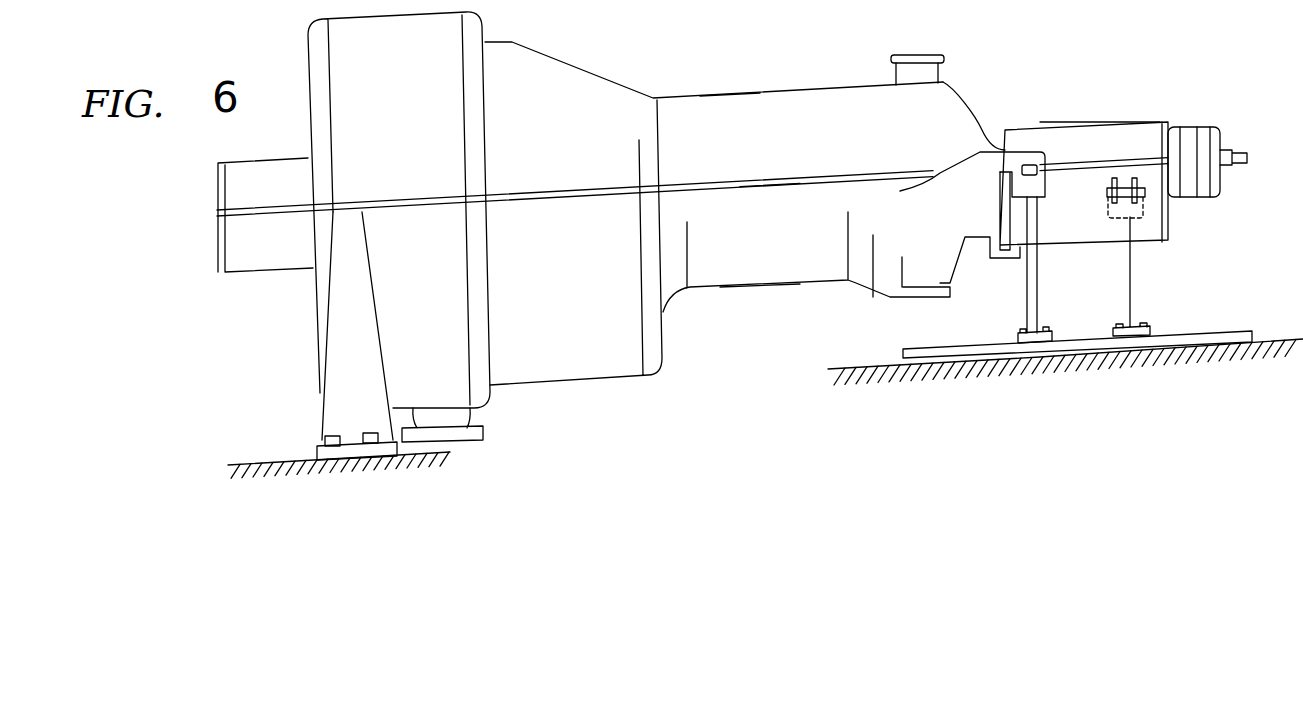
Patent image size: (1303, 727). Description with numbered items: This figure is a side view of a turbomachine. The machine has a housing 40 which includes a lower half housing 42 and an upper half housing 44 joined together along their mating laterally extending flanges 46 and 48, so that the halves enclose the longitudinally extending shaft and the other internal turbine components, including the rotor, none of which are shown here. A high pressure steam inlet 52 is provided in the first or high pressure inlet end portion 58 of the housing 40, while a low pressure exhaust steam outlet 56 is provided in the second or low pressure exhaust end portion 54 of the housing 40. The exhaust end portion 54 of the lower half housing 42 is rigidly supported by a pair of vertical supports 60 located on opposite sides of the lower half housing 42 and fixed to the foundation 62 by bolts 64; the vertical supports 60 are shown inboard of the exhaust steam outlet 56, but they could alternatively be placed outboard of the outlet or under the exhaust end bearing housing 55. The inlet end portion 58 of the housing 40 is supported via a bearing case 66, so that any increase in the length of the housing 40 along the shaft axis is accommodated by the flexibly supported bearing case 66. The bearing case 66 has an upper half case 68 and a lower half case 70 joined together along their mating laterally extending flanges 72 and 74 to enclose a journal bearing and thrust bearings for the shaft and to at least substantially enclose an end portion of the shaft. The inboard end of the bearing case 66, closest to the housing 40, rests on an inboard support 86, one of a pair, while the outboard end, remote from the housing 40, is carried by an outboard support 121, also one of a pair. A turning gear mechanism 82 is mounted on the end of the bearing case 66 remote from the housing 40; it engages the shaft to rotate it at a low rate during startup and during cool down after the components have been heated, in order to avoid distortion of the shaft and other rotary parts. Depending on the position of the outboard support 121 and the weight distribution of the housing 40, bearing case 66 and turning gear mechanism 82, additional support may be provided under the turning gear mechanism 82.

The housing 40 is at (746, 93).
The lower half housing 42 is at (788, 286).
The upper half housing 44 is at (815, 89).
The laterally extending flange 46 is at (768, 194).
The laterally extending flange 48 is at (778, 180).
The high pressure steam inlet 52 is at (940, 55).
The exhaust end portion 54 is at (440, 330).
The exhaust end bearing housing 55 is at (250, 273).
The low pressure exhaust steam outlet 56 is at (484, 438).
The inlet end portion 58 is at (968, 100).
The vertical supports 60 is at (360, 314).
The foundation 62 is at (278, 461).
The bolts 64 is at (368, 433).
The bearing case 66 is at (1129, 121).
The upper half case 68 is at (1058, 121).
The lower half case 70 is at (1086, 246).
The laterally extending flange 72 is at (1126, 176).
The laterally extending flange 74 is at (1080, 173).
The turning gear mechanism 82 is at (1218, 128).
The inboard support 86 is at (1026, 294).
The outboard support 121 is at (1132, 284).